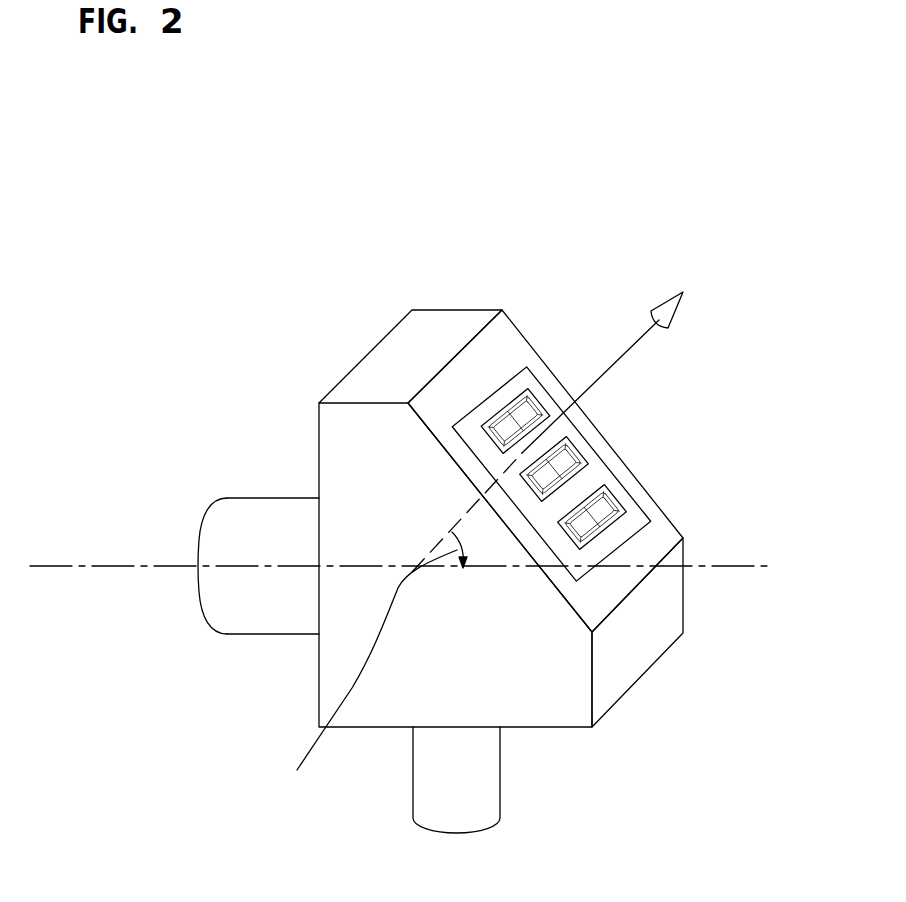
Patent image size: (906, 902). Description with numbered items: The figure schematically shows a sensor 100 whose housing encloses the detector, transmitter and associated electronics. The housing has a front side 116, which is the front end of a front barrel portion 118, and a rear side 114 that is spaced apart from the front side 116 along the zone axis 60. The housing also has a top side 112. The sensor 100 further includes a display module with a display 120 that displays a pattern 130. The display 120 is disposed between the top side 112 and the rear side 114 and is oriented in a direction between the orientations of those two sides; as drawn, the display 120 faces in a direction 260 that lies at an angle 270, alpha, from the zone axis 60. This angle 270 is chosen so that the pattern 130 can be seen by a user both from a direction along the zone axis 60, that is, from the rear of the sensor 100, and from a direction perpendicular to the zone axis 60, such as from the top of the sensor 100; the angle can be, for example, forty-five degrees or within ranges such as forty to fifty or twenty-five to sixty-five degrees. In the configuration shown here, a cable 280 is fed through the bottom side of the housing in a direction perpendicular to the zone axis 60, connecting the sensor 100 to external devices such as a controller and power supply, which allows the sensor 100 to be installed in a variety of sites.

The zone axis 60 is at (53, 568).
The sensor 100 is at (424, 488).
The top side 112 is at (425, 322).
The rear side 114 is at (623, 657).
The front side 116 is at (202, 533).
The front barrel portion 118 is at (214, 523).
The display 120 is at (513, 347).
The pattern 130 is at (593, 472).
The direction 260 is at (565, 419).
The viewing angle 270 is at (367, 662).
The cable 280 is at (500, 797).